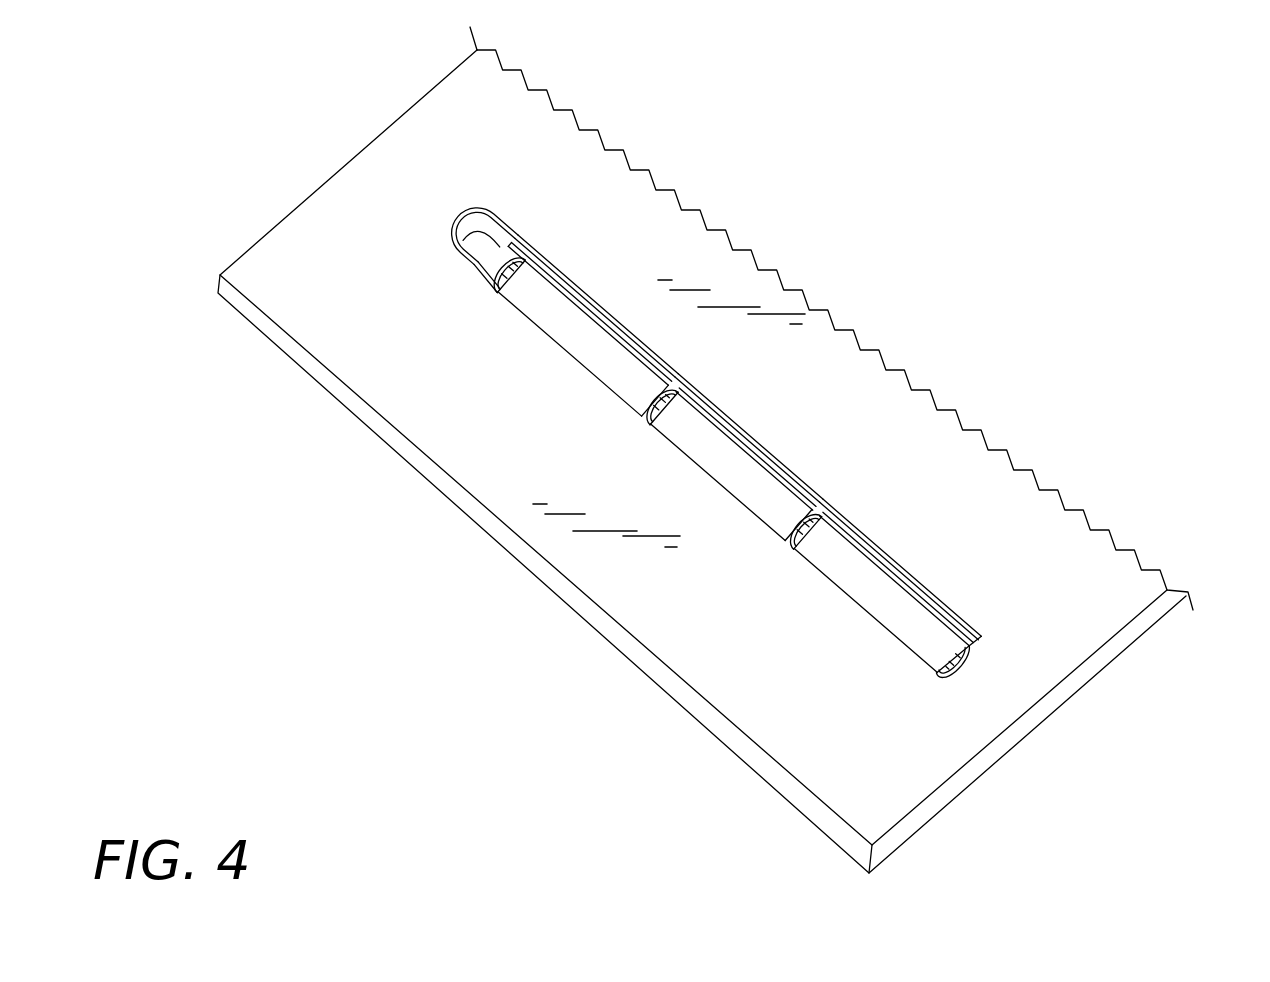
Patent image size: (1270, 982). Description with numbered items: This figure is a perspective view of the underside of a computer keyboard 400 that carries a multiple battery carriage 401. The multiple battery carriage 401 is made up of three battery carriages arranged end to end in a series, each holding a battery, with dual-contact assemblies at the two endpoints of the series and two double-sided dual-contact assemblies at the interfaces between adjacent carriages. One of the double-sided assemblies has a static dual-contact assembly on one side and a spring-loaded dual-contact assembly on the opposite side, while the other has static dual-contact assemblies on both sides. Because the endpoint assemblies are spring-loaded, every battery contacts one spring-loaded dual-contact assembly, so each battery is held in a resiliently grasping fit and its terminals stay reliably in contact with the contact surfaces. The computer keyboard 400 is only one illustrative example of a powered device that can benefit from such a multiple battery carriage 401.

The computer keyboard 400 is at (1137, 125).
The multiple battery carriage 401 is at (392, 170).